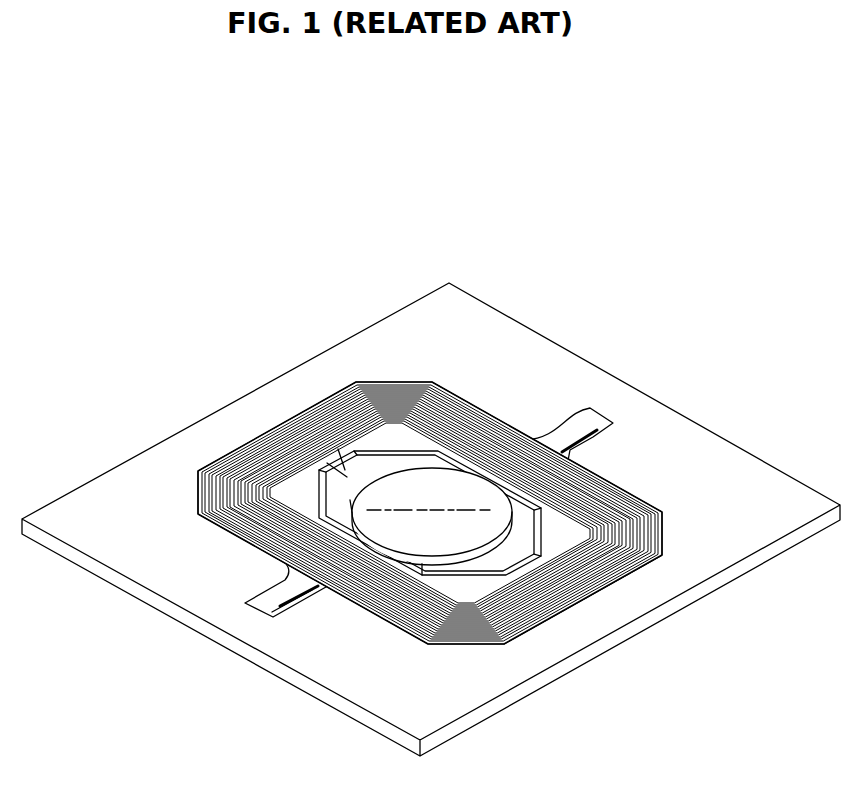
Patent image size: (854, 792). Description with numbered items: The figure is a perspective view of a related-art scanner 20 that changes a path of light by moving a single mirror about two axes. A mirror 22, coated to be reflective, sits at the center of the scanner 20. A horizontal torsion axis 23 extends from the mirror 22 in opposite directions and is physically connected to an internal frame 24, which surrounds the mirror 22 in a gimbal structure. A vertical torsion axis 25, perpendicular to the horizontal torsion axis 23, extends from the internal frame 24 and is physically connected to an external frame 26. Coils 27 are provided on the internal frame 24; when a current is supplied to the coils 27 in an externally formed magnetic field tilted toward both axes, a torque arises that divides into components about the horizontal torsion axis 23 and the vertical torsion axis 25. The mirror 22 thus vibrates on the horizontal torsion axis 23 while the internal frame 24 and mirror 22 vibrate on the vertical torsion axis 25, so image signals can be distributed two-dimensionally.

The scanner 20 is at (92, 150).
The mirror 22 is at (348, 458).
The horizontal torsion axis 23 is at (350, 508).
The internal frame 24 is at (460, 395).
The vertical torsion axis 25 is at (567, 452).
The external frame 26 is at (690, 445).
The coils 27 is at (667, 513).